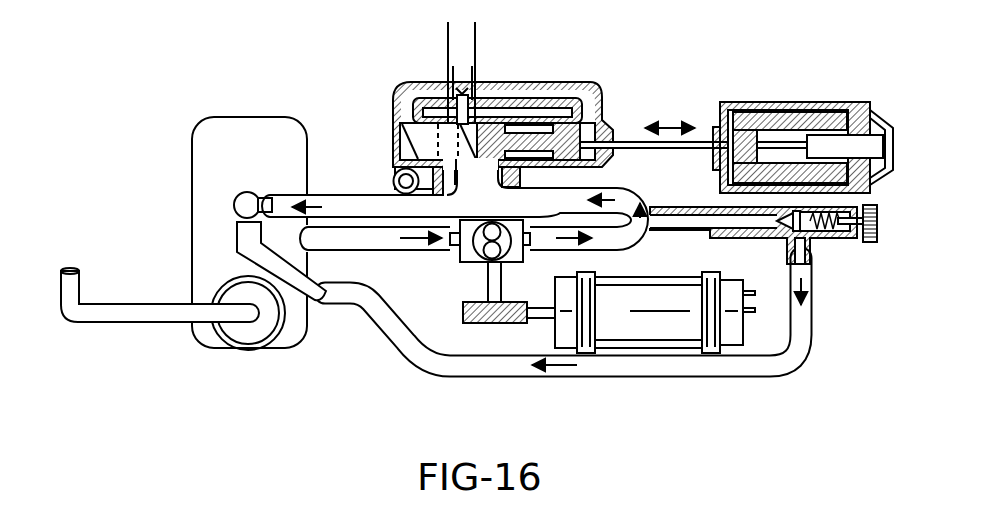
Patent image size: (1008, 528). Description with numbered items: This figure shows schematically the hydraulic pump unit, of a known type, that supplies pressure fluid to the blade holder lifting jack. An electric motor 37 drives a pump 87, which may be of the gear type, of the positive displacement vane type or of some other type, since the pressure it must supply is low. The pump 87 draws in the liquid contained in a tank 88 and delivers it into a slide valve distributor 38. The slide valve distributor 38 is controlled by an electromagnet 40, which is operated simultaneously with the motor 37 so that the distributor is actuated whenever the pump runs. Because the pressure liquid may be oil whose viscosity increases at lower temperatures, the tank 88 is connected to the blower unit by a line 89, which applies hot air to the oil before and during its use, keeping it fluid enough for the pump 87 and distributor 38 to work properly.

The electric motor 37 is at (653, 327).
The slide valve distributor 38 is at (521, 130).
The electromagnet 40 is at (787, 112).
The pump 87 is at (467, 253).
The tank 88 is at (192, 187).
The line 89 is at (110, 322).